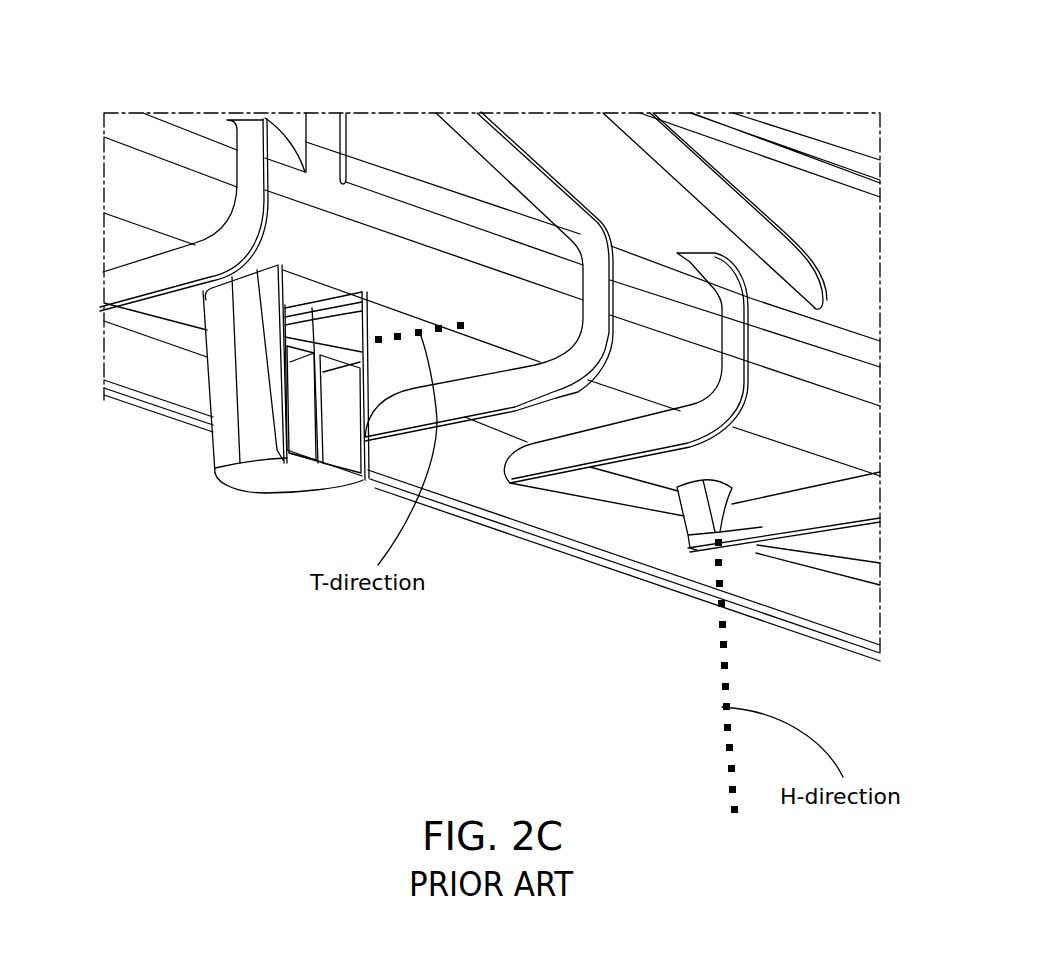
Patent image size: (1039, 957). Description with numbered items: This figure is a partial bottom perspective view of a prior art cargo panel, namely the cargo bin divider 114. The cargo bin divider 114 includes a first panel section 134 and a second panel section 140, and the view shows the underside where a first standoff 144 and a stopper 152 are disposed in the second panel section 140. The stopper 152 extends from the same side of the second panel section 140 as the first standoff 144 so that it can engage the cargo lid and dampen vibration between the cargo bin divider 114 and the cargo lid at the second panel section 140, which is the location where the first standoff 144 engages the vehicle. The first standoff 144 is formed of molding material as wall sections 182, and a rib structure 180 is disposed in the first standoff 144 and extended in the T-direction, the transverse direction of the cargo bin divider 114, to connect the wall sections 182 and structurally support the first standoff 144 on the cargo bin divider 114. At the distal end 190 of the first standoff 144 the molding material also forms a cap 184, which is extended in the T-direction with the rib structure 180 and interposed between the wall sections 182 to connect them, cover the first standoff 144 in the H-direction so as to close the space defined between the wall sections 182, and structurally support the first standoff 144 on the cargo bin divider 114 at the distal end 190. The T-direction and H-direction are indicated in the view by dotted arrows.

The cargo bin divider 114 is at (575, 113).
The first panel section 134 is at (845, 217).
The second panel section 140 is at (117, 243).
The first standoff 144 is at (273, 483).
The stopper 152 is at (697, 509).
The rib structure 180 is at (302, 347).
The wall sections 182 is at (238, 357).
The cap 184 is at (298, 484).
The distal end 190 is at (227, 481).